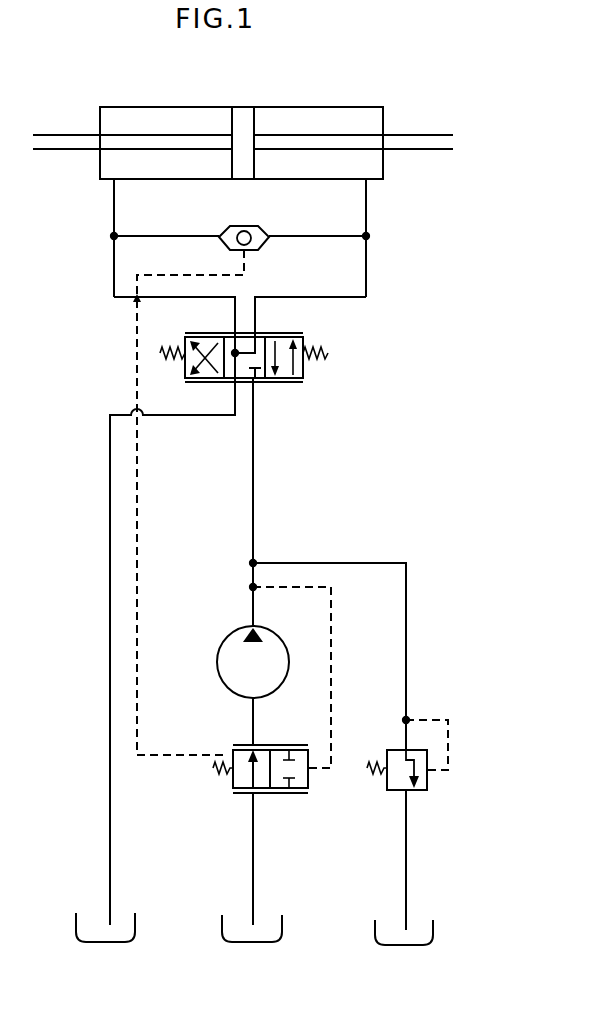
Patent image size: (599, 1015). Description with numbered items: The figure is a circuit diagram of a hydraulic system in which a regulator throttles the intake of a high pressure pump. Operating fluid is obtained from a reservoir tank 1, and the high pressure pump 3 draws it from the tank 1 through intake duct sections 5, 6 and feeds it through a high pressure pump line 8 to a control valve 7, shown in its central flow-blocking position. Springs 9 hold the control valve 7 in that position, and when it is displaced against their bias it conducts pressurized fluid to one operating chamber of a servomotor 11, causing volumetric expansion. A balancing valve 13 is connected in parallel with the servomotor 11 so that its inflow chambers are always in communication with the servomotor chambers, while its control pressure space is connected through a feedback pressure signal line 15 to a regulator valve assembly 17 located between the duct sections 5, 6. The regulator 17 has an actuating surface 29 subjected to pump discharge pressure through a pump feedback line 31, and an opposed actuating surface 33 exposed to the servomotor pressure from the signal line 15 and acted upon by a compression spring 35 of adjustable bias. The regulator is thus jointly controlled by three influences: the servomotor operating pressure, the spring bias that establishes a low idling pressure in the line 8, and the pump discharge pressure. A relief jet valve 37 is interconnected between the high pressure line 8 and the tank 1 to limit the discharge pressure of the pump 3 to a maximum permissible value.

The reservoir tank 1 is at (95, 930).
The high pressure pump 3 is at (243, 657).
The intake duct section 5 is at (252, 850).
The intake duct section 6 is at (252, 718).
The control valve 7 is at (302, 345).
The high pressure pump line 8 is at (254, 491).
The springs 9 is at (165, 362).
The servomotor 11 is at (357, 162).
The balancing valve 13 is at (258, 239).
The feedback pressure signal line 15 is at (137, 504).
The regulator valve assembly 17 is at (296, 758).
The actuating surface 29 is at (310, 781).
The pump feedback line 31 is at (332, 665).
The opposed actuating surface 33 is at (233, 779).
The compression spring 35 is at (220, 770).
The relief jet valve 37 is at (422, 763).